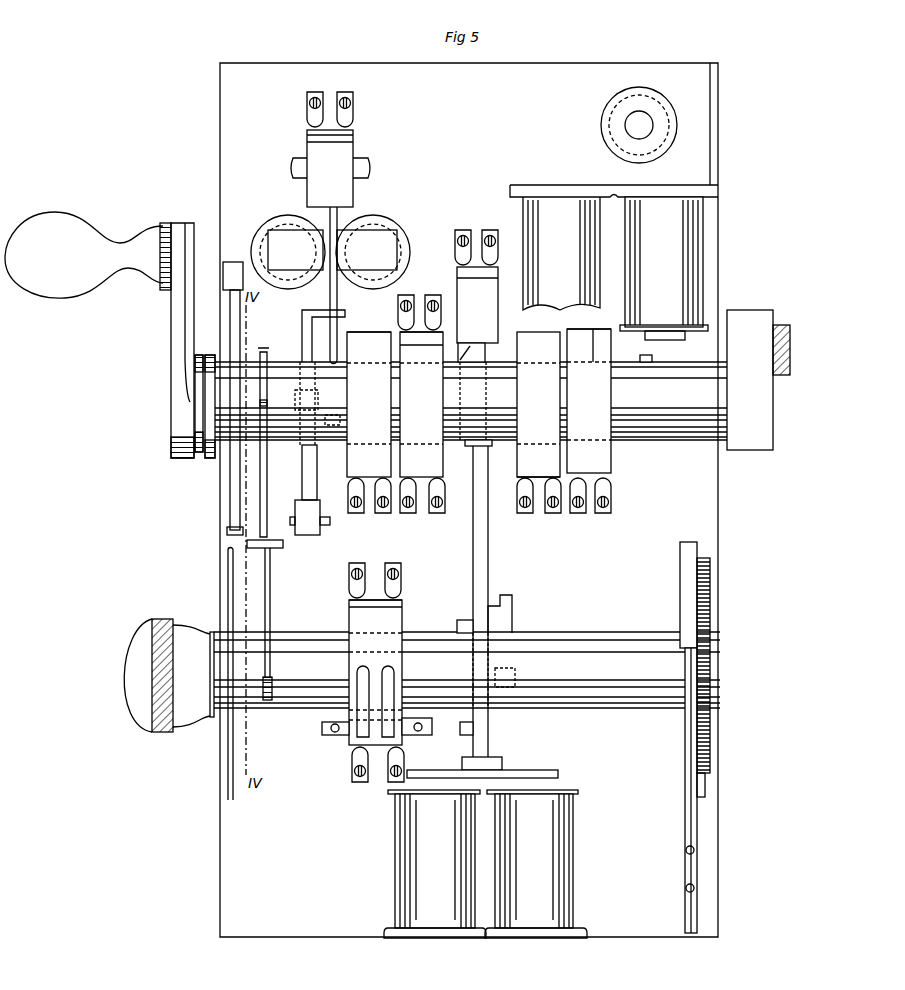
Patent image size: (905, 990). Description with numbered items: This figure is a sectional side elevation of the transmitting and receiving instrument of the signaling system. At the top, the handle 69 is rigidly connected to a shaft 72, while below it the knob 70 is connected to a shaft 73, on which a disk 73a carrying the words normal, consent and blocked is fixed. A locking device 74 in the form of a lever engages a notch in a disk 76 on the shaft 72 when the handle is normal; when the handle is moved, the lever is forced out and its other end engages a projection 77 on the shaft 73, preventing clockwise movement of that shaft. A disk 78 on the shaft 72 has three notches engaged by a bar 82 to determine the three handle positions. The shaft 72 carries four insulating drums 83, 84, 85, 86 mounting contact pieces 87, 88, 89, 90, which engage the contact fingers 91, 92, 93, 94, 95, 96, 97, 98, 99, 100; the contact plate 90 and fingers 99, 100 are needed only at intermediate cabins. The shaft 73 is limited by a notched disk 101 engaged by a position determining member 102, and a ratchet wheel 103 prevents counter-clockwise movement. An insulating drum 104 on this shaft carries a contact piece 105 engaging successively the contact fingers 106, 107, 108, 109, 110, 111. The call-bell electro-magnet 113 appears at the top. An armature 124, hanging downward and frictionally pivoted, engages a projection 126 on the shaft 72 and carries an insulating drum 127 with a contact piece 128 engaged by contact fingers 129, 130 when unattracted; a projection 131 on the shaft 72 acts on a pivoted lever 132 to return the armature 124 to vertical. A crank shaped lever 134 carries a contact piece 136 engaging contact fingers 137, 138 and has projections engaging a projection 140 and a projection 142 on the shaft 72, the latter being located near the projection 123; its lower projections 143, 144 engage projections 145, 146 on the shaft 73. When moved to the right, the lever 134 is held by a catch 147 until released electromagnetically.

The handle 69 is at (70, 225).
The knob 70 is at (150, 645).
The shaft 72 is at (275, 442).
The shaft 73 is at (255, 710).
The disk 73a is at (228, 580).
The locking device 74 is at (271, 598).
The disk 76 is at (263, 351).
The projection 77 is at (273, 690).
The disk 78 is at (230, 482).
The bar 82 is at (223, 268).
The insulating drum 83 is at (369, 404).
The insulating drum 84 is at (421, 404).
The insulating drum 85 is at (538, 404).
The insulating drum 86 is at (589, 401).
The contact piece 87 is at (369, 347).
The contact piece 88 is at (421, 347).
The contact piece 89 is at (517, 459).
The contact plate 90 is at (589, 345).
The contact finger 91 is at (433, 295).
The contact finger 92 is at (398, 305).
The contact finger 93 is at (356, 513).
The contact finger 94 is at (383, 513).
The contact finger 95 is at (408, 513).
The contact finger 96 is at (437, 513).
The contact finger 97 is at (525, 513).
The contact finger 98 is at (553, 513).
The contact finger 99 is at (578, 513).
The contact finger 100 is at (603, 513).
The disk 101 is at (680, 552).
The position determining member 102 is at (686, 745).
The ratchet wheel 103 is at (701, 558).
The insulating drum 104 is at (402, 617).
The contact piece 105 is at (349, 604).
The contact finger 106 is at (349, 575).
The contact finger 107 is at (401, 575).
The contact finger 108 is at (322, 729).
The contact finger 109 is at (432, 727).
The contact finger 110 is at (352, 768).
The contact finger 111 is at (404, 763).
The electro-magnet 113 is at (639, 125).
The projection 123 is at (645, 355).
The armature 124 is at (328, 303).
The projection 126 is at (331, 414).
The insulating drum 127 is at (330, 168).
The contact piece 128 is at (307, 134).
The contact finger 129 is at (307, 101).
The contact finger 130 is at (352, 101).
The projection 131 is at (295, 398).
The pivoted lever 132 is at (312, 345).
The crank shaped lever 134 is at (489, 573).
The contact piece 136 is at (498, 270).
The contact finger 137 is at (456, 245).
The contact finger 138 is at (498, 241).
The projection 140 is at (468, 446).
The projection 142 is at (472, 342).
The projection 143 is at (512, 597).
The projection 144 is at (465, 735).
The projection 145 is at (512, 670).
The projection 146 is at (462, 620).
The catch 147 is at (502, 763).